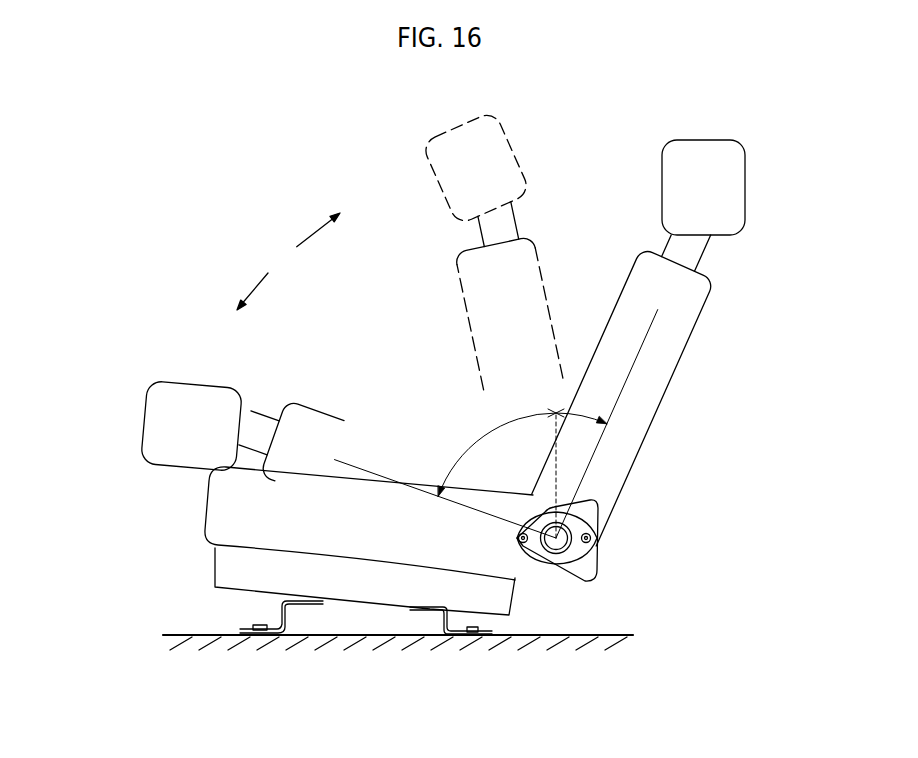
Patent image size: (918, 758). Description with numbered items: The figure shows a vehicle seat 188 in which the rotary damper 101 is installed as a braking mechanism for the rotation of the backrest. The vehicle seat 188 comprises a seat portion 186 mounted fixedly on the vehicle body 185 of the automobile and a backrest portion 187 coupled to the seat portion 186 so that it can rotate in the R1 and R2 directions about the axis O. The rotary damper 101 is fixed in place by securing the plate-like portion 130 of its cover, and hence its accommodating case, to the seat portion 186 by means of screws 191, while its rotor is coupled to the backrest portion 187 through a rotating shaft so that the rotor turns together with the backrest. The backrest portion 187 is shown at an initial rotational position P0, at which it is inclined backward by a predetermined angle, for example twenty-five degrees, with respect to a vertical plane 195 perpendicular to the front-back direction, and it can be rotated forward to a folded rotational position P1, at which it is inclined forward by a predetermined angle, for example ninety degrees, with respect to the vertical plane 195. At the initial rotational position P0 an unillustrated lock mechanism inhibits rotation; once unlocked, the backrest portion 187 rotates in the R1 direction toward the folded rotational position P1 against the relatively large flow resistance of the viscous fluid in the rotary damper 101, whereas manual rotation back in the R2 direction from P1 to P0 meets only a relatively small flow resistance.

The rotary damper 101 is at (552, 550).
The plate-like portion 130 is at (570, 523).
The vehicle body 185 is at (193, 647).
The seat portion 186 is at (225, 492).
The backrest portion 187 is at (670, 332).
The vehicle seat 188 is at (186, 538).
The screws 191 is at (591, 538).
The vertical plane 195 is at (557, 463).
The axis O is at (556, 538).
The initial rotational position P0 is at (634, 370).
The folded rotational position P1 is at (360, 470).
The R1 direction R1 is at (254, 289).
The R2 direction R2 is at (318, 230).